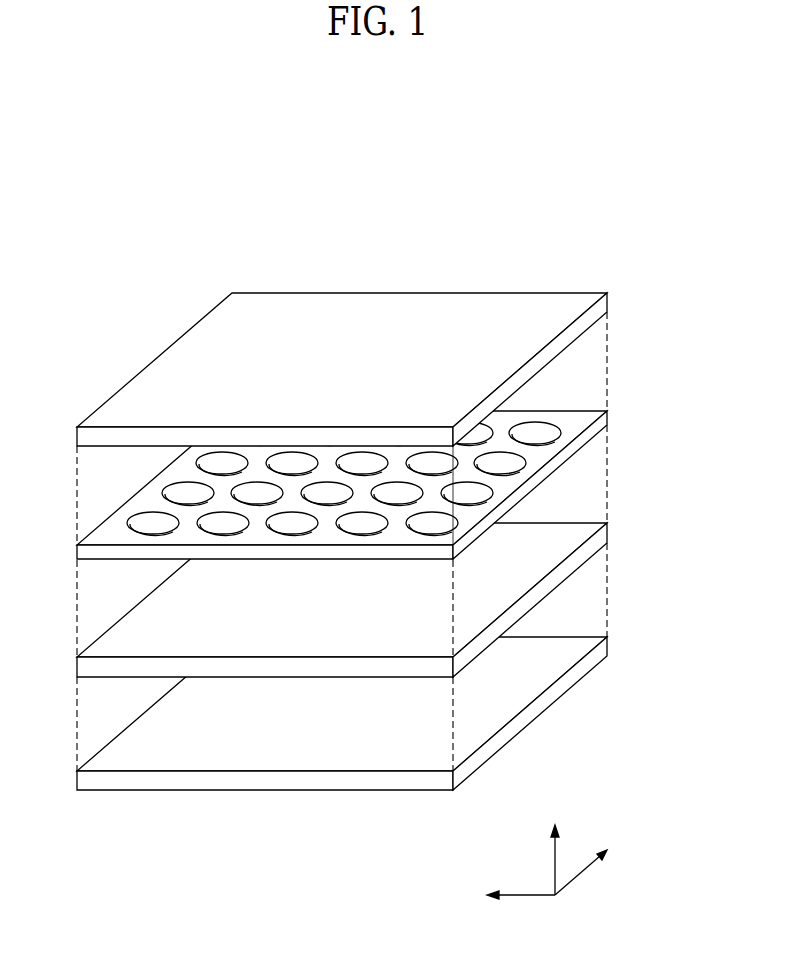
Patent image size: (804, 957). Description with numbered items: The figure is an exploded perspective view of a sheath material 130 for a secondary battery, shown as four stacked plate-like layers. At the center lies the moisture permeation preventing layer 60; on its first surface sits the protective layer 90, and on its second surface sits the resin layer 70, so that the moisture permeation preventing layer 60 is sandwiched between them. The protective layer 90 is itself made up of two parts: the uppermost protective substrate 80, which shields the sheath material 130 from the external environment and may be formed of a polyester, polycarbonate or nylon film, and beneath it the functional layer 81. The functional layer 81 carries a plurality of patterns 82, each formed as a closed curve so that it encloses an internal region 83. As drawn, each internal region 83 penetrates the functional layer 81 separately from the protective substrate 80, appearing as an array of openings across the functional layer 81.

The sheath material for a secondary battery 130 is at (373, 202).
The protective layer 90 is at (411, 426).
The protective substrate 80 is at (545, 357).
The functional layer 81 is at (392, 485).
The pattern 82 is at (527, 465).
The internal region 83 is at (482, 490).
The moisture permeation preventing layer 60 is at (533, 561).
The resin layer 70 is at (527, 683).